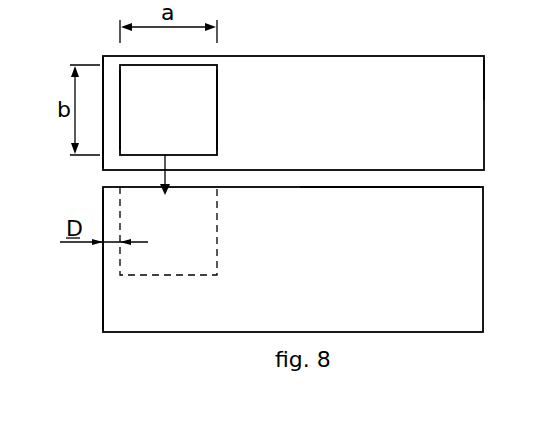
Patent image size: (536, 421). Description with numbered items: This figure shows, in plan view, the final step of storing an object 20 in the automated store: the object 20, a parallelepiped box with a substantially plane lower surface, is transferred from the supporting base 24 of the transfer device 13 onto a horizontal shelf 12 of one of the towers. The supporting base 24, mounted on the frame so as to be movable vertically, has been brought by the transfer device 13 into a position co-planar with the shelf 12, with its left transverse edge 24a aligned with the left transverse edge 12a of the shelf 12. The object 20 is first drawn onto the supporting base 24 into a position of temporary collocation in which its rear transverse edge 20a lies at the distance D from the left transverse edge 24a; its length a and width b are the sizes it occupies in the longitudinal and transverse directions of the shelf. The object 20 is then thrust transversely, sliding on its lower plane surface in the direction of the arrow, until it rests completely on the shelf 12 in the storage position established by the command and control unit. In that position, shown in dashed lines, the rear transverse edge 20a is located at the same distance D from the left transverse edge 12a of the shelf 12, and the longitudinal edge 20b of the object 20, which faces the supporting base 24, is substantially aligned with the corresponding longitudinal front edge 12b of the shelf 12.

The shelf 12 is at (466, 320).
The left transverse edge of the shelf 12a is at (102, 315).
The longitudinal front edge of the shelf 12b is at (375, 187).
The transfer device 13 is at (493, 95).
The object 20 is at (210, 127).
The rear transverse edge of the object 20a is at (118, 144).
The longitudinal edge of the object 20b is at (207, 62).
The supporting base 24 is at (468, 144).
The left transverse edge of the supporting base 24a is at (103, 58).